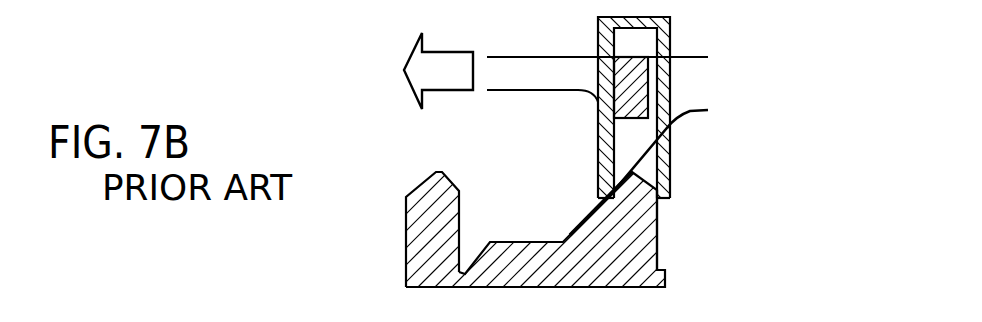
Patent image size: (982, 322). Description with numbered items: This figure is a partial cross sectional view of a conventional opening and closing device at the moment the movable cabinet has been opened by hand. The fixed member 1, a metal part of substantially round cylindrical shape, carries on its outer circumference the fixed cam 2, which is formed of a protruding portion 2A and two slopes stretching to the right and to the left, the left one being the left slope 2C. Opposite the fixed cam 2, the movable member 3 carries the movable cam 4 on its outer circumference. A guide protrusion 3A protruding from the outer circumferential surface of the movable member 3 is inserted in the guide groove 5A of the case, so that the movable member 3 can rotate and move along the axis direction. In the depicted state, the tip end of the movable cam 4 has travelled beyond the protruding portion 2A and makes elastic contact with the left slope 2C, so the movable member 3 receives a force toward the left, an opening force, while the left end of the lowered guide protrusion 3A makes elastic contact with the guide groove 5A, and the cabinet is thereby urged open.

The fixed member 1 is at (425, 262).
The fixed cam 2 is at (640, 250).
The protruding portion 2A is at (660, 173).
The left slope 2C is at (587, 217).
The movable member 3 is at (698, 68).
The guide protrusion 3A is at (638, 95).
The movable cam 4 is at (623, 143).
The guide groove 5A is at (672, 137).